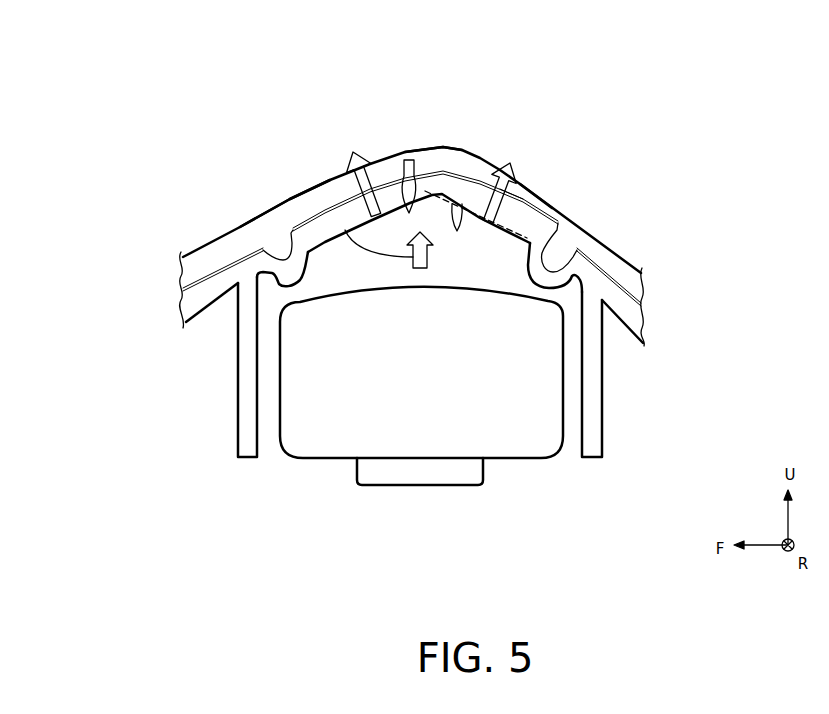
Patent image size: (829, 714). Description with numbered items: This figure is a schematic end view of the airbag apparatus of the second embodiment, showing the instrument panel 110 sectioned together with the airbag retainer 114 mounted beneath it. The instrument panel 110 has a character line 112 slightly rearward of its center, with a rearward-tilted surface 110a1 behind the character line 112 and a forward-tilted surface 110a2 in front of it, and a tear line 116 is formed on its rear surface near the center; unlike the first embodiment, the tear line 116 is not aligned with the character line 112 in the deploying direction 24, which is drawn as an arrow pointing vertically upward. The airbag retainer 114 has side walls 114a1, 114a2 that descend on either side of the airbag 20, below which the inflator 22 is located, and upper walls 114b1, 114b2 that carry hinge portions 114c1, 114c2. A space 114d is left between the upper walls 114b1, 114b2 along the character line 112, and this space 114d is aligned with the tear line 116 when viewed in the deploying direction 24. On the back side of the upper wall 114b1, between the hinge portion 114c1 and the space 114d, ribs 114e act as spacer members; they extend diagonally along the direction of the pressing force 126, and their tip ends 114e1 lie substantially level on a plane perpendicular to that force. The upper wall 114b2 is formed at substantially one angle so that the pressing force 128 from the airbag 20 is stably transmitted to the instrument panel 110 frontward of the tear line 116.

The airbag 20 is at (323, 461).
The inflator 22 is at (407, 487).
The deploying direction 24 is at (326, 180).
The instrument panel 110 is at (554, 192).
The rearward-tilted surface 110a1 is at (540, 190).
The forward-tilted surface 110a2 is at (330, 190).
The character line 112 is at (447, 160).
The airbag retainer 114 is at (607, 392).
The side wall 114a1 is at (588, 459).
The side wall 114a2 is at (250, 460).
The upper wall 114b1 is at (534, 226).
The upper wall 114b2 is at (308, 228).
The hinge portion 114c1 is at (560, 243).
The hinge portion 114c2 is at (276, 252).
The space 114d is at (391, 158).
The rib 114e is at (488, 160).
The tip end 114e1 is at (513, 167).
The tear line 116 is at (410, 158).
The pressing force 126 is at (520, 186).
The pressing force 128 is at (350, 178).